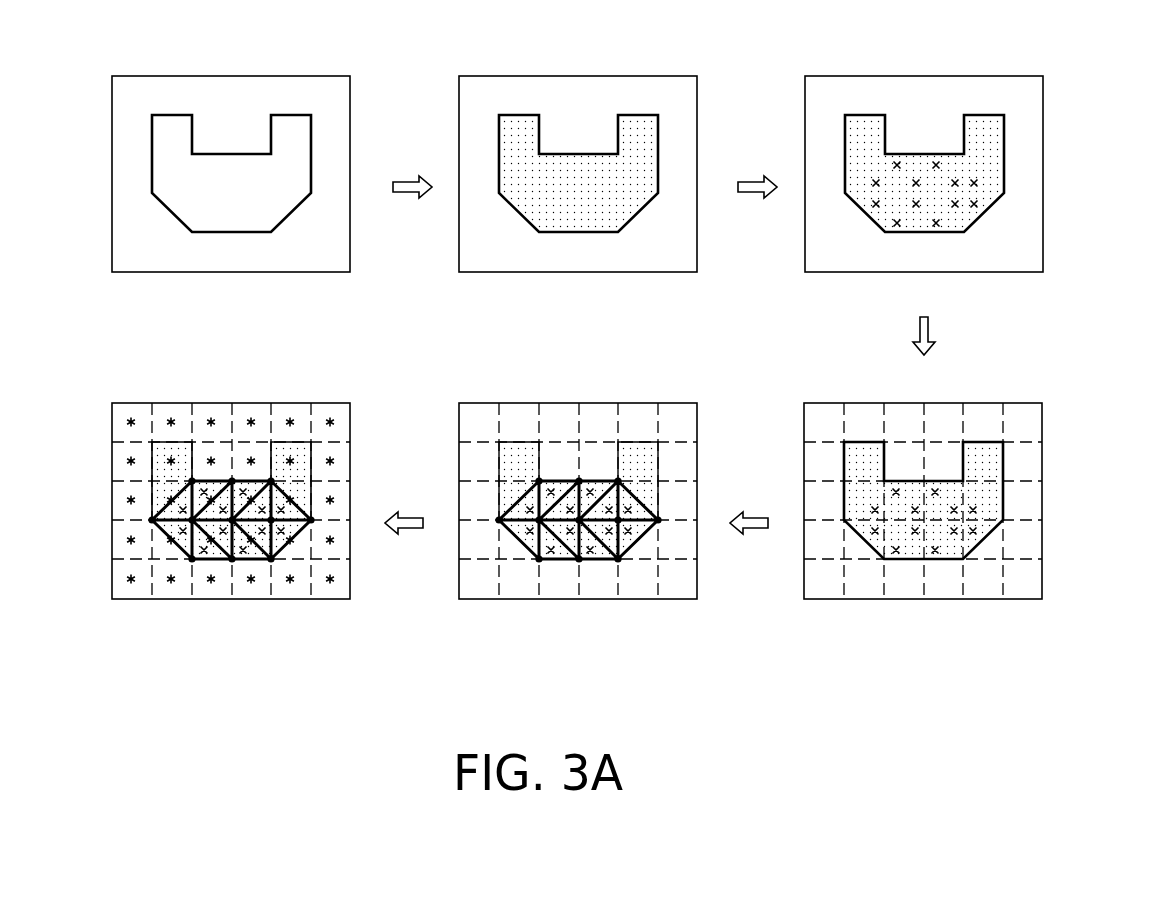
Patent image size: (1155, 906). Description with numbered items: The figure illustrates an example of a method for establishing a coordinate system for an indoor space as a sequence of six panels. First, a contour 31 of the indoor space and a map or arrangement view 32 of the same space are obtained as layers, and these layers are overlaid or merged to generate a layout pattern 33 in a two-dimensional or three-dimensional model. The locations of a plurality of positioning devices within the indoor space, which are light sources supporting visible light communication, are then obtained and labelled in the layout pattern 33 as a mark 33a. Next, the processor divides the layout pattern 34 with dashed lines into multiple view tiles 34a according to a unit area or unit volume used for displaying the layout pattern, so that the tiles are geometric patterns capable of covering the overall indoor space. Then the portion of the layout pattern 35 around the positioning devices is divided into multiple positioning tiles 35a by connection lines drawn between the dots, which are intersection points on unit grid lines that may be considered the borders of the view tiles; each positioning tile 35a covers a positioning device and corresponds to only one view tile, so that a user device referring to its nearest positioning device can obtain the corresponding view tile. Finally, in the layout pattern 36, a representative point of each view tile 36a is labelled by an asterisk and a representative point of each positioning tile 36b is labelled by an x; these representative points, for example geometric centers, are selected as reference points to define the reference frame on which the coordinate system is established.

The contour 31 is at (278, 75).
The arrangement view 32 is at (625, 75).
The layout pattern 33 is at (972, 75).
The mark 33a is at (978, 184).
The layout pattern 34 is at (970, 402).
The view tile 34a is at (987, 578).
The layout pattern 35 is at (625, 402).
The positioning tile 35a is at (597, 552).
The layout pattern 36 is at (278, 402).
The view tile 36a is at (249, 582).
The positioning tile 36b is at (200, 563).